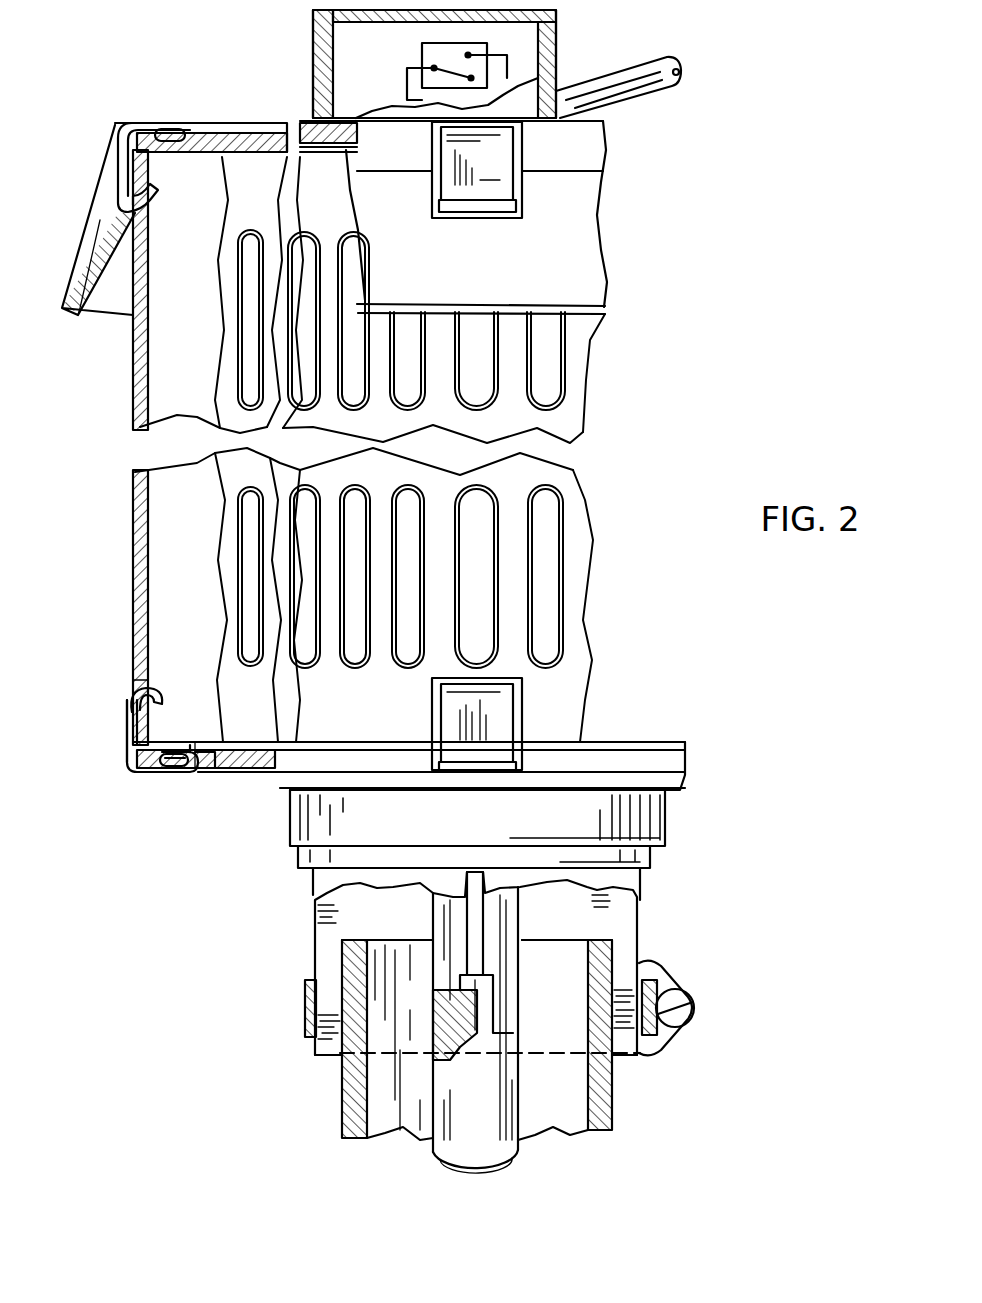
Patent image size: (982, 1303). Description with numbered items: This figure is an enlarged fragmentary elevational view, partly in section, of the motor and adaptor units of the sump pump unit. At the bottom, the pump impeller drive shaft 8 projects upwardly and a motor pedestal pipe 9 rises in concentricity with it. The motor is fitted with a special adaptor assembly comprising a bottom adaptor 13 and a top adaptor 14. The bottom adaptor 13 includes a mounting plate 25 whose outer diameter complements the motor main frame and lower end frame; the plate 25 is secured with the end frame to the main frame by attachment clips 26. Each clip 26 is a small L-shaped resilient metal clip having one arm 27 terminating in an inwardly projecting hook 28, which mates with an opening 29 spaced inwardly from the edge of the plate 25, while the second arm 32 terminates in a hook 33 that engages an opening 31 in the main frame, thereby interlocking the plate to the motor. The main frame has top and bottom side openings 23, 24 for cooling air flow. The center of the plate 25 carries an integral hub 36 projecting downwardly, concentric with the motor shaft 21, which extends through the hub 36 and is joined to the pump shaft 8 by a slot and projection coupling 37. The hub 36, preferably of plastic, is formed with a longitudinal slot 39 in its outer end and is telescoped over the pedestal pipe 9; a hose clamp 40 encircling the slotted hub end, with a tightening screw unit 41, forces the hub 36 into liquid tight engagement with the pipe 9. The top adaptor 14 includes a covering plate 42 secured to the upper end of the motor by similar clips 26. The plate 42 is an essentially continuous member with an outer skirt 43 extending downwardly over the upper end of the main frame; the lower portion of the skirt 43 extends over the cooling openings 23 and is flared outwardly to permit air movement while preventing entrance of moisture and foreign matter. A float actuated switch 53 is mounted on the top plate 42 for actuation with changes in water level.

The drive shaft 8 is at (480, 1157).
The pedestal pipe 9 is at (607, 1100).
The bottom adaptor 13 is at (692, 794).
The top adaptor 14 is at (612, 147).
The motor shaft 21 is at (490, 930).
The top side openings 23 is at (493, 368).
The bottom side openings 24 is at (543, 583).
The mounting plate 25 is at (152, 771).
The attachment clip 26 is at (165, 118).
The clip arm 27 is at (172, 776).
The hook 28 is at (190, 773).
The opening 29 is at (197, 744).
The opening 31 is at (133, 688).
The second arm 32 is at (124, 722).
The hook 33 is at (138, 700).
The interconnecting hub 36 is at (645, 913).
The slot and projection coupling 37 is at (505, 1010).
The slot 39 is at (328, 948).
The hose clamp 40 is at (306, 1010).
The tightening screw unit 41 is at (690, 1012).
The covering plate 42 is at (243, 122).
The skirt 43 is at (596, 238).
The float actuated switch 53 is at (552, 44).